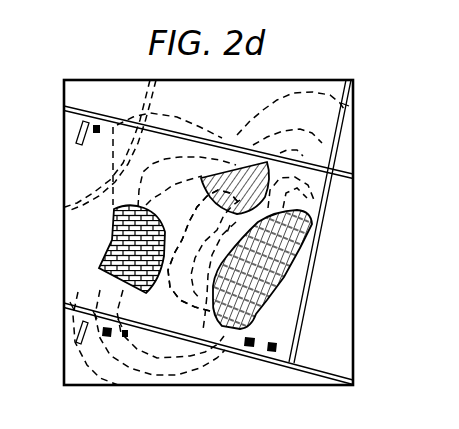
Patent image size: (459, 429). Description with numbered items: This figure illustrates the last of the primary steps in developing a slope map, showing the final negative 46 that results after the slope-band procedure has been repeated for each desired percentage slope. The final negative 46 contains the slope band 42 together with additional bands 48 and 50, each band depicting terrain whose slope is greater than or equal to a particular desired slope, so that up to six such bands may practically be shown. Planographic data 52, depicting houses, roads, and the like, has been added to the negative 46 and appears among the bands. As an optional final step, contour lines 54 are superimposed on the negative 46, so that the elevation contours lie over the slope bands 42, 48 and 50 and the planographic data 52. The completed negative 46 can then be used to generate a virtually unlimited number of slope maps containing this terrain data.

The final negative 46 is at (90, 87).
The additional band 48 is at (268, 170).
The additional band 50 is at (110, 245).
The slope band 42 is at (263, 265).
The planographic data 52 is at (300, 308).
The contour lines 54 is at (186, 302).